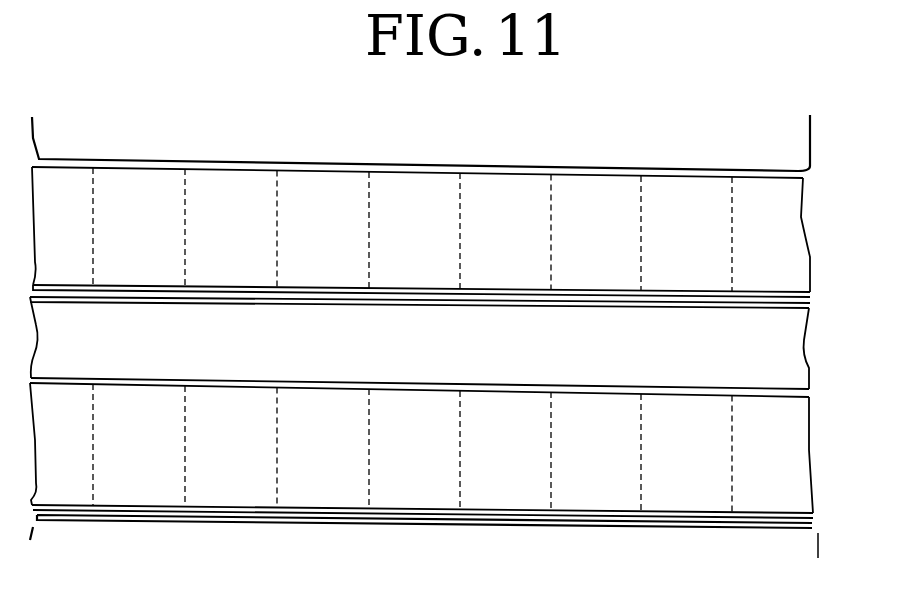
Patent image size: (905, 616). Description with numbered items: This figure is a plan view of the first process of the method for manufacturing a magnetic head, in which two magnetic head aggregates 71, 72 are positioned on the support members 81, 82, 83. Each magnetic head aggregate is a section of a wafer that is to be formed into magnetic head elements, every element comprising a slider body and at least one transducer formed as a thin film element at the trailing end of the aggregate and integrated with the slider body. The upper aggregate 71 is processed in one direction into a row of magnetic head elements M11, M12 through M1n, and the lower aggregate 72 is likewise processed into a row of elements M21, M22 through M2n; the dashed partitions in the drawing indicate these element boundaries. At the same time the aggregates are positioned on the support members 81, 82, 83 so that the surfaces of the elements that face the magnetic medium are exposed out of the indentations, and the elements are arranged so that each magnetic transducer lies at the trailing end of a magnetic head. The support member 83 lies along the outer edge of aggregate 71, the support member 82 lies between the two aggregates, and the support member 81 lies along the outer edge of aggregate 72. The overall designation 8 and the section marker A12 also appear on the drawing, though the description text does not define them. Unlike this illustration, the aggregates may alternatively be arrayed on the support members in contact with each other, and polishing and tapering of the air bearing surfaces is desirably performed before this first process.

The vibration gyroscope 8 is at (462, 587).
The magnetic head aggregate 71 is at (797, 218).
The magnetic head aggregate 72 is at (795, 452).
The support member 81 is at (812, 528).
The support member 82 is at (798, 348).
The support member 83 is at (797, 143).
The magnetic head element M11 is at (60, 188).
The magnetic head element M12 is at (737, 140).
The magnetic head element M1n is at (772, 141).
The magnetic head element M21 is at (64, 488).
The magnetic head element M22 is at (755, 550).
The magnetic head element M2n is at (781, 500).
The section line A12 is at (247, 117).